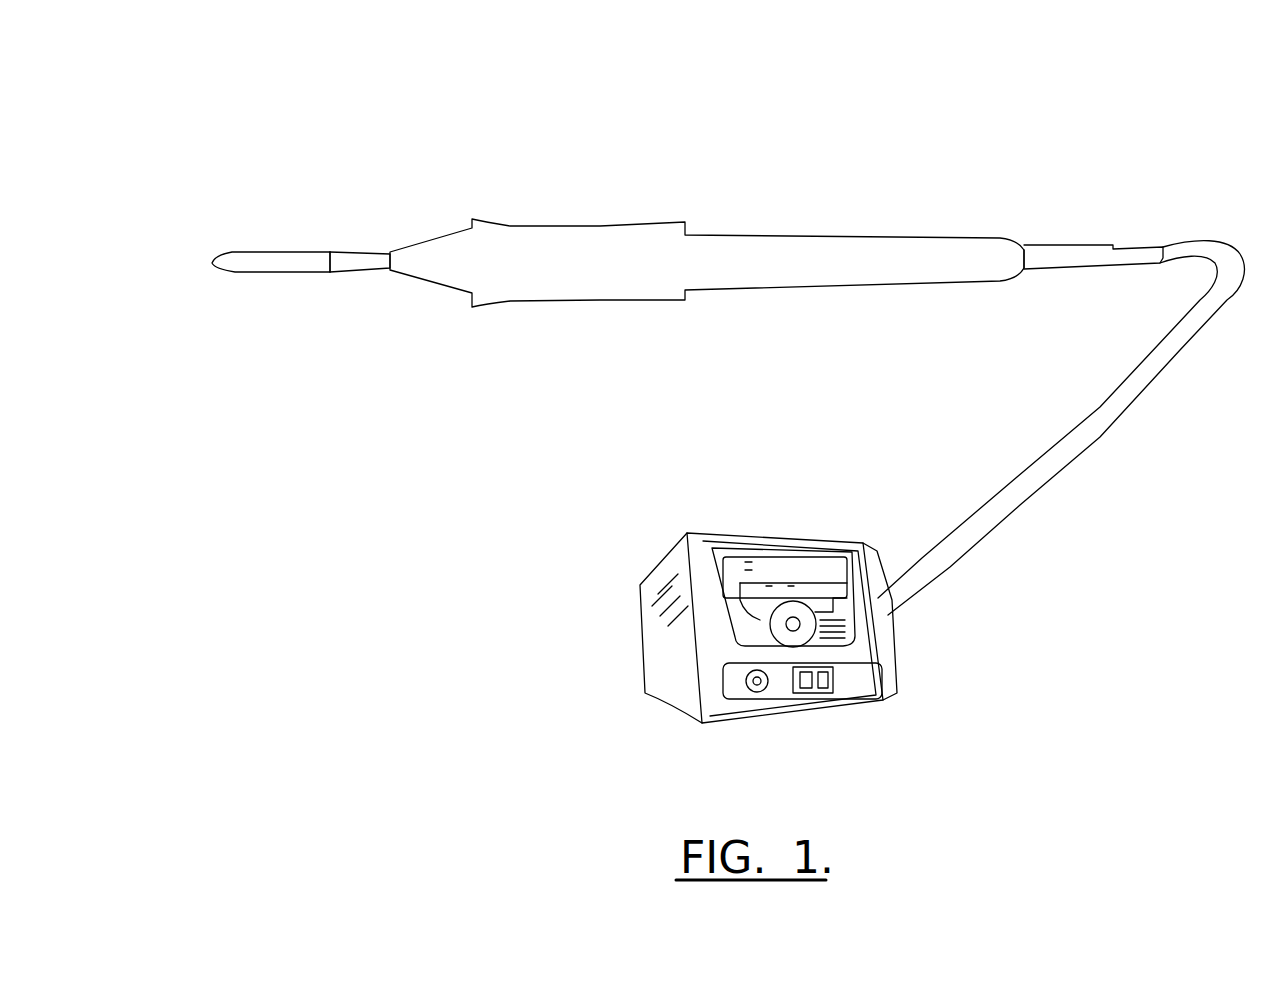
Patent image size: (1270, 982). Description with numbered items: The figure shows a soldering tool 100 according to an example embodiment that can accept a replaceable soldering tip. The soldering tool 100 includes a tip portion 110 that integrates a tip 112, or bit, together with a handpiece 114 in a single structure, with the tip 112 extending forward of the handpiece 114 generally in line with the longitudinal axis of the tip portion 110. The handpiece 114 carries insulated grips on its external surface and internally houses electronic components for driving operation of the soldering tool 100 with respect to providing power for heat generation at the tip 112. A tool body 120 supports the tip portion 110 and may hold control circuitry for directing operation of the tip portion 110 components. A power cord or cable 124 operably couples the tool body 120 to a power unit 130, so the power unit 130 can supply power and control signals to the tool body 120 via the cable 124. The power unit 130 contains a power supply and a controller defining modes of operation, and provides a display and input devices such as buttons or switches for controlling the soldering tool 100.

The soldering tool 100 is at (405, 127).
The tip portion 110 is at (330, 293).
The tip 112 is at (262, 271).
The handpiece 114 is at (593, 250).
The tool body 120 is at (735, 322).
The cable 124 is at (1057, 262).
The power unit 130 is at (903, 673).